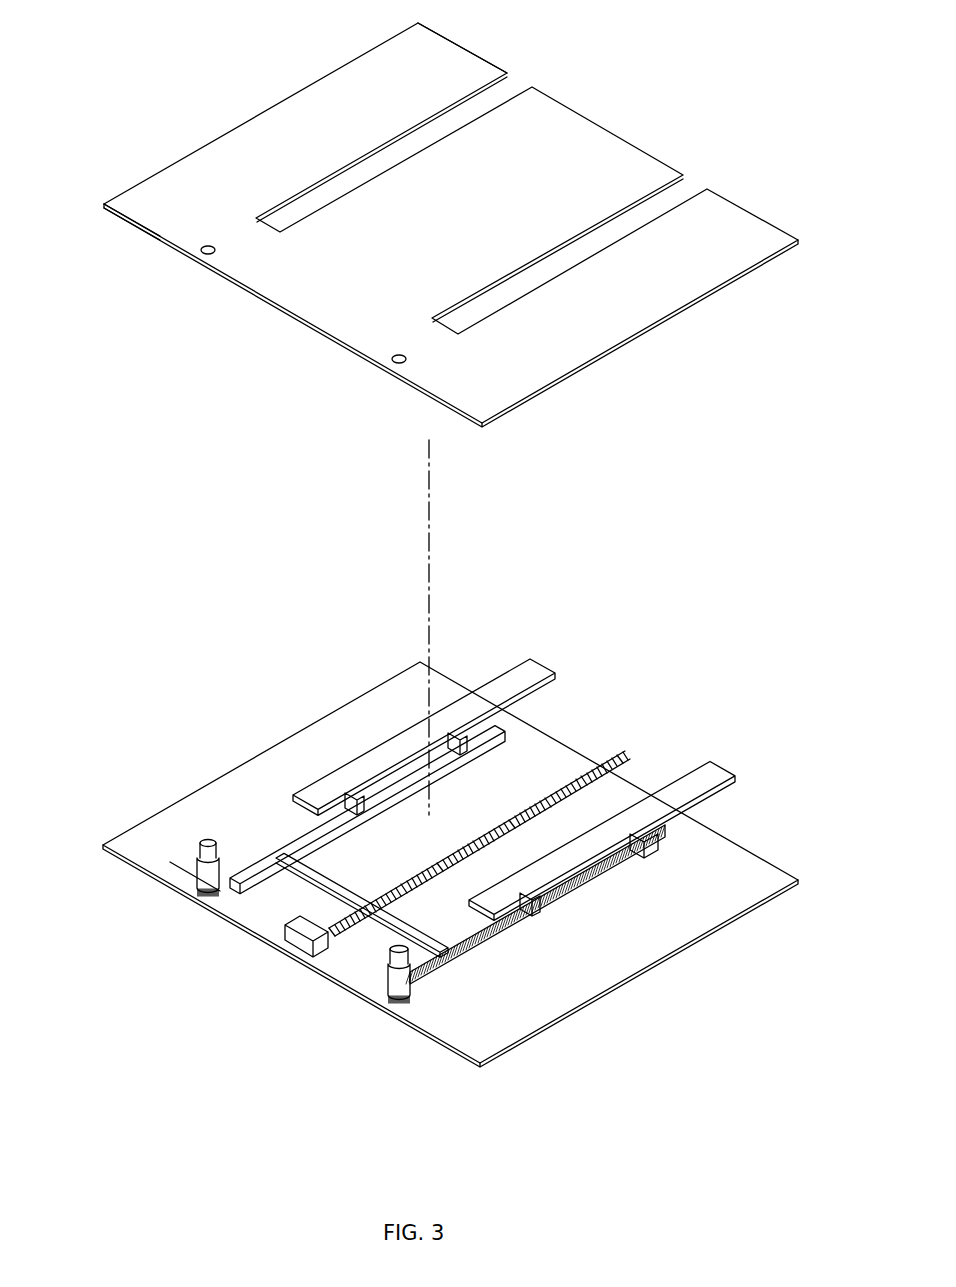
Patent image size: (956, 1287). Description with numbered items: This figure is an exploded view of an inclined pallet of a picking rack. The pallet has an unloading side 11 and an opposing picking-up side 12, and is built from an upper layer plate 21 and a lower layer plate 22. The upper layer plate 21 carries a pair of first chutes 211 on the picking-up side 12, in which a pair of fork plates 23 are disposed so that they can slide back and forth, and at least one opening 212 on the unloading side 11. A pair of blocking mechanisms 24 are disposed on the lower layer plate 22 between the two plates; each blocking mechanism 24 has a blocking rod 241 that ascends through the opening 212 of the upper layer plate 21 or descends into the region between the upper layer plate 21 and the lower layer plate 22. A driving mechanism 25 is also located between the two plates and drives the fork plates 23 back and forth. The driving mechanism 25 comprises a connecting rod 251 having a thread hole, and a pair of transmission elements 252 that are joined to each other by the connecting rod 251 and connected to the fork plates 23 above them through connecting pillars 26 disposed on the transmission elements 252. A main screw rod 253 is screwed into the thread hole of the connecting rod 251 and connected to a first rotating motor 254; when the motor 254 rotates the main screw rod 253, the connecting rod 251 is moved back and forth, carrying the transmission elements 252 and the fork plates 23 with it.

The unloading side 11 is at (128, 218).
The picking-up side 12 is at (464, 44).
The upper layer plate 21 is at (213, 163).
The first chute 211 is at (503, 93).
The opening 212 is at (201, 252).
The lower layer plate 22 is at (135, 848).
The fork plate 23 is at (538, 671).
The blocking mechanism 24 is at (197, 872).
The blocking rod 241 is at (208, 838).
The driving mechanism 25 is at (447, 901).
The connecting rod 251 is at (383, 937).
The transmission element 252 is at (257, 878).
The main screw rod 253 is at (620, 753).
The first rotating motor 254 is at (289, 965).
The connecting pillar 26 is at (657, 848).